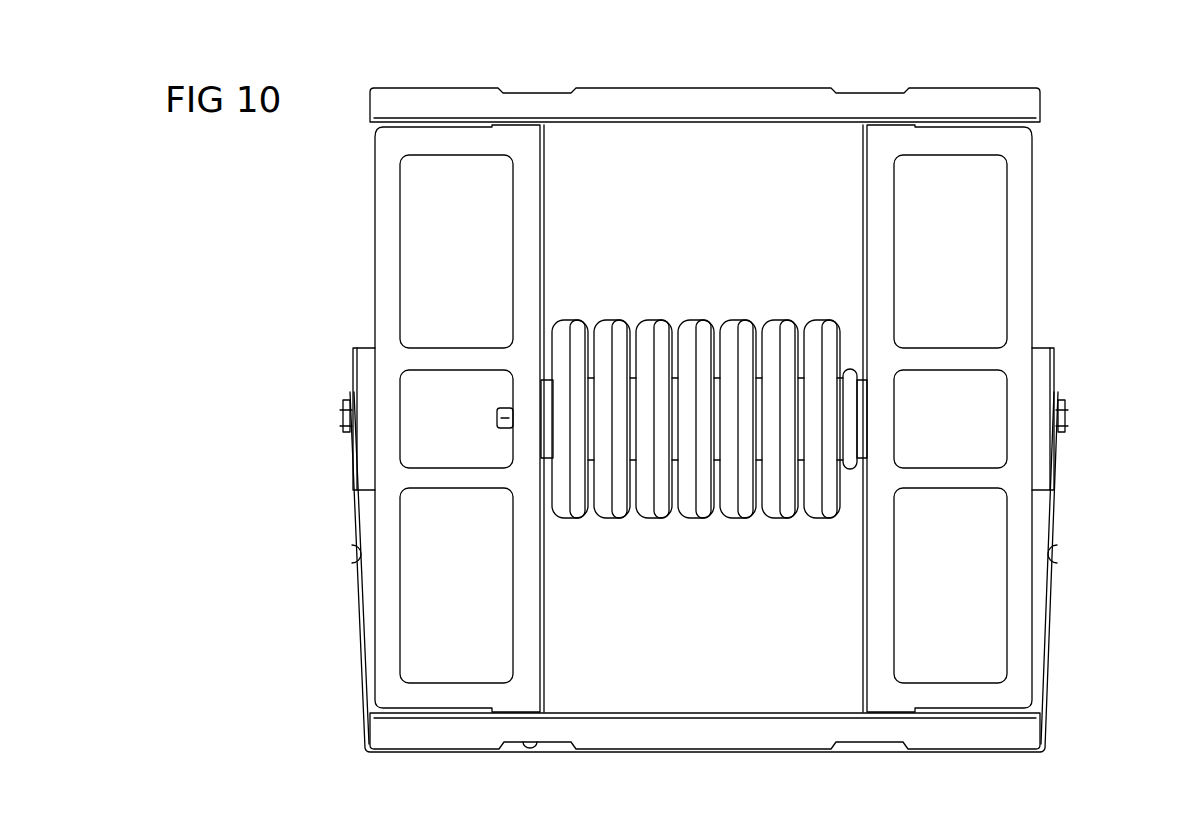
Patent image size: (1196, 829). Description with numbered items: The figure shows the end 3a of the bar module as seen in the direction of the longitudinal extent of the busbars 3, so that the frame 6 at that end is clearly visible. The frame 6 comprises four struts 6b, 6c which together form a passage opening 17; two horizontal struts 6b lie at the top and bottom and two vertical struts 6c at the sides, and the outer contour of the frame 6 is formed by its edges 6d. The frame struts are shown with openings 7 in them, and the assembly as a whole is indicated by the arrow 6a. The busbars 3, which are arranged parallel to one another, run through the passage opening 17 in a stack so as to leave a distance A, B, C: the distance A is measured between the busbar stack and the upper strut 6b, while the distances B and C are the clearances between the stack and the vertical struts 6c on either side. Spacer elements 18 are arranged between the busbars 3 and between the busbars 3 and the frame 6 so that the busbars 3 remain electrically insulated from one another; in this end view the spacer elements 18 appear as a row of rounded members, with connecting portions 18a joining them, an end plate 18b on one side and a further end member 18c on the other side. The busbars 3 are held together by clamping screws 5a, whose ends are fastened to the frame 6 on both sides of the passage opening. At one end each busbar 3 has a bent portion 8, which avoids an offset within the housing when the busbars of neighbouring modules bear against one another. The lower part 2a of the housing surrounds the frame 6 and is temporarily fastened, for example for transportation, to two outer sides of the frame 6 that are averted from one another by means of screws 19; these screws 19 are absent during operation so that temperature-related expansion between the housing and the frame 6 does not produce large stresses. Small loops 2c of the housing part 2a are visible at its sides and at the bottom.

The lower part of the housing 2a is at (1048, 635).
The band loop 2c is at (355, 556).
The busbar 3 is at (696, 451).
The end of the busbar 3a is at (684, 524).
The screw 5a is at (497, 418).
The frame 6 is at (1031, 318).
The housing frame 6a is at (1082, 103).
The strut 6b is at (703, 95).
The strut 6c is at (382, 195).
The edge 6d is at (432, 90).
The window opening 7 is at (915, 222).
The bent portion 8 is at (836, 506).
The passage opening 17 is at (795, 152).
The spacer element 18 is at (647, 441).
The holder connector 18a is at (633, 455).
The end plate of holder 18b is at (548, 432).
The pressure disc 18c is at (858, 472).
The screw 19 is at (342, 418).
The distance A is at (688, 320).
The distance B is at (798, 278).
The distance C is at (553, 320).